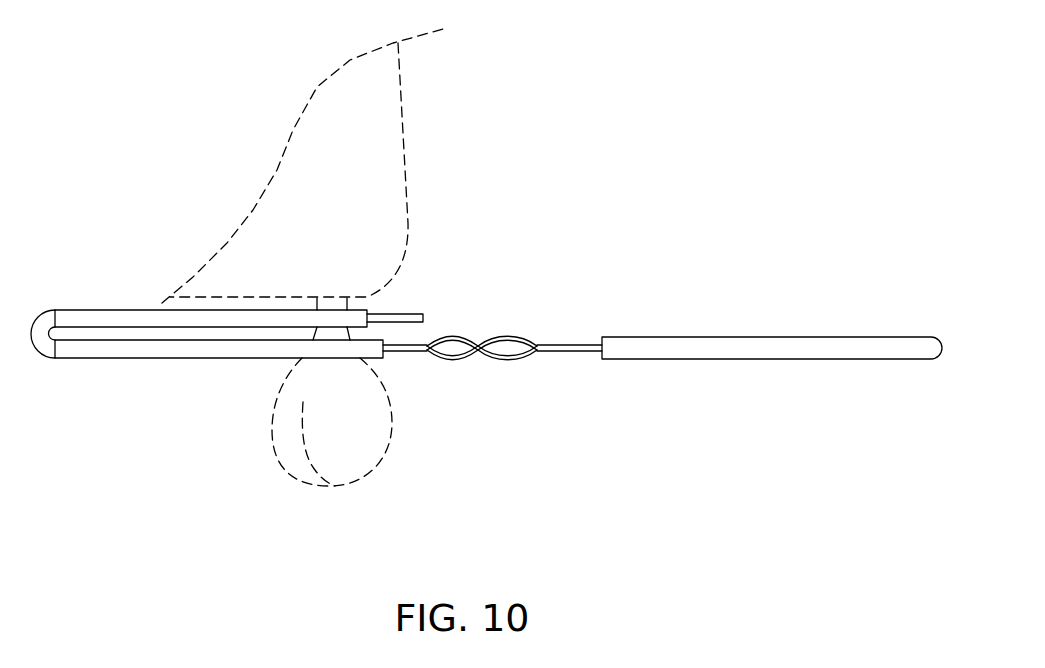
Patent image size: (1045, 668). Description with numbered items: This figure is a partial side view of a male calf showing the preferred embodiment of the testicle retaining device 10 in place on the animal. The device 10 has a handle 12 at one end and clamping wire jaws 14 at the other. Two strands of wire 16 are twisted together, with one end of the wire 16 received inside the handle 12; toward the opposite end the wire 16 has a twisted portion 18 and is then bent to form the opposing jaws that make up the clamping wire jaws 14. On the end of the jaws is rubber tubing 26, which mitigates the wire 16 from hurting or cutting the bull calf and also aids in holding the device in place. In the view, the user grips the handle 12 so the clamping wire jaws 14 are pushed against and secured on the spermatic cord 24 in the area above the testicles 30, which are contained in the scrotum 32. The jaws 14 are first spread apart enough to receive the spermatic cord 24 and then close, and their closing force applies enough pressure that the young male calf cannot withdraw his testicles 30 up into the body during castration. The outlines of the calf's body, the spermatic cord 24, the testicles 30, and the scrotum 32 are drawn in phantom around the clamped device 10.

The testicle retaining device 10 is at (702, 168).
The handle 12 is at (814, 337).
The clamping wire jaws 14 is at (127, 340).
The wire 16 is at (570, 346).
The twisted portion 18 is at (477, 340).
The spermatic cord 24 is at (310, 330).
The rubber tubing 26 is at (80, 358).
The testicles 30 is at (365, 435).
The scrotum 32 is at (382, 390).